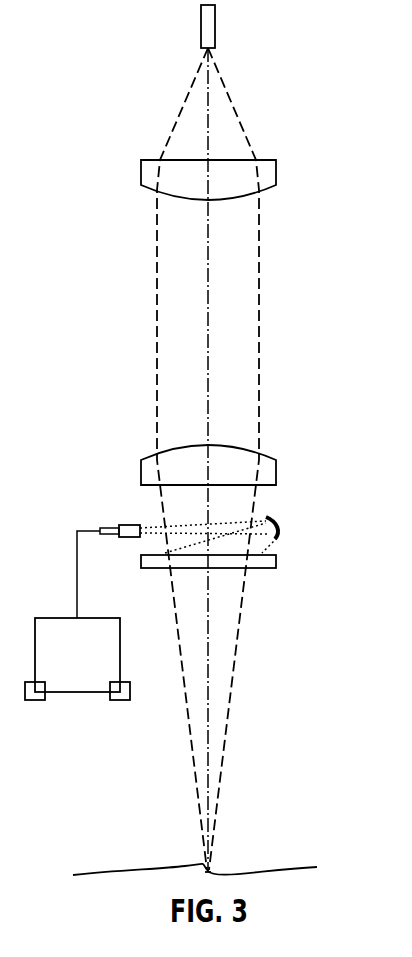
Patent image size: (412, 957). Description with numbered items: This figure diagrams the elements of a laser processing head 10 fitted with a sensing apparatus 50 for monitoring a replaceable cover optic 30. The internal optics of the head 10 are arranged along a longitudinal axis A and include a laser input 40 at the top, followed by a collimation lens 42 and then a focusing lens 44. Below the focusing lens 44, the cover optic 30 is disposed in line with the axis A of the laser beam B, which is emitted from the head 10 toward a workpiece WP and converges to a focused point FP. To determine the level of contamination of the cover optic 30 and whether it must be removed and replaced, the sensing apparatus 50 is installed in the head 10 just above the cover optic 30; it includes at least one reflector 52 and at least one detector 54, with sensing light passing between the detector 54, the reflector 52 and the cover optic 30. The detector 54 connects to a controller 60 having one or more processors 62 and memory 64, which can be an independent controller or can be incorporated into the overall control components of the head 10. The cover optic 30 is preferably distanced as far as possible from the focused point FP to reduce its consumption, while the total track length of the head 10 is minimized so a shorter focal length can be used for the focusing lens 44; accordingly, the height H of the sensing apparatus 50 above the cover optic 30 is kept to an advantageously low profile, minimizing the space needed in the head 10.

The laser processing head 10 is at (320, 111).
The laser input 40 is at (215, 27).
The collimation lens 42 is at (276, 172).
The focusing lens 44 is at (276, 475).
The cover optic 30 is at (276, 562).
The sensing apparatus 50 is at (84, 448).
The reflector 52 is at (278, 522).
The detector 54 is at (130, 525).
The controller 60 is at (58, 618).
The processor 62 is at (35, 700).
The memory 64 is at (118, 700).
The longitudinal axis A is at (208, 271).
The laser beam B is at (260, 232).
The height H is at (363, 495).
The workpiece WP is at (142, 868).
The focused point FP is at (210, 878).